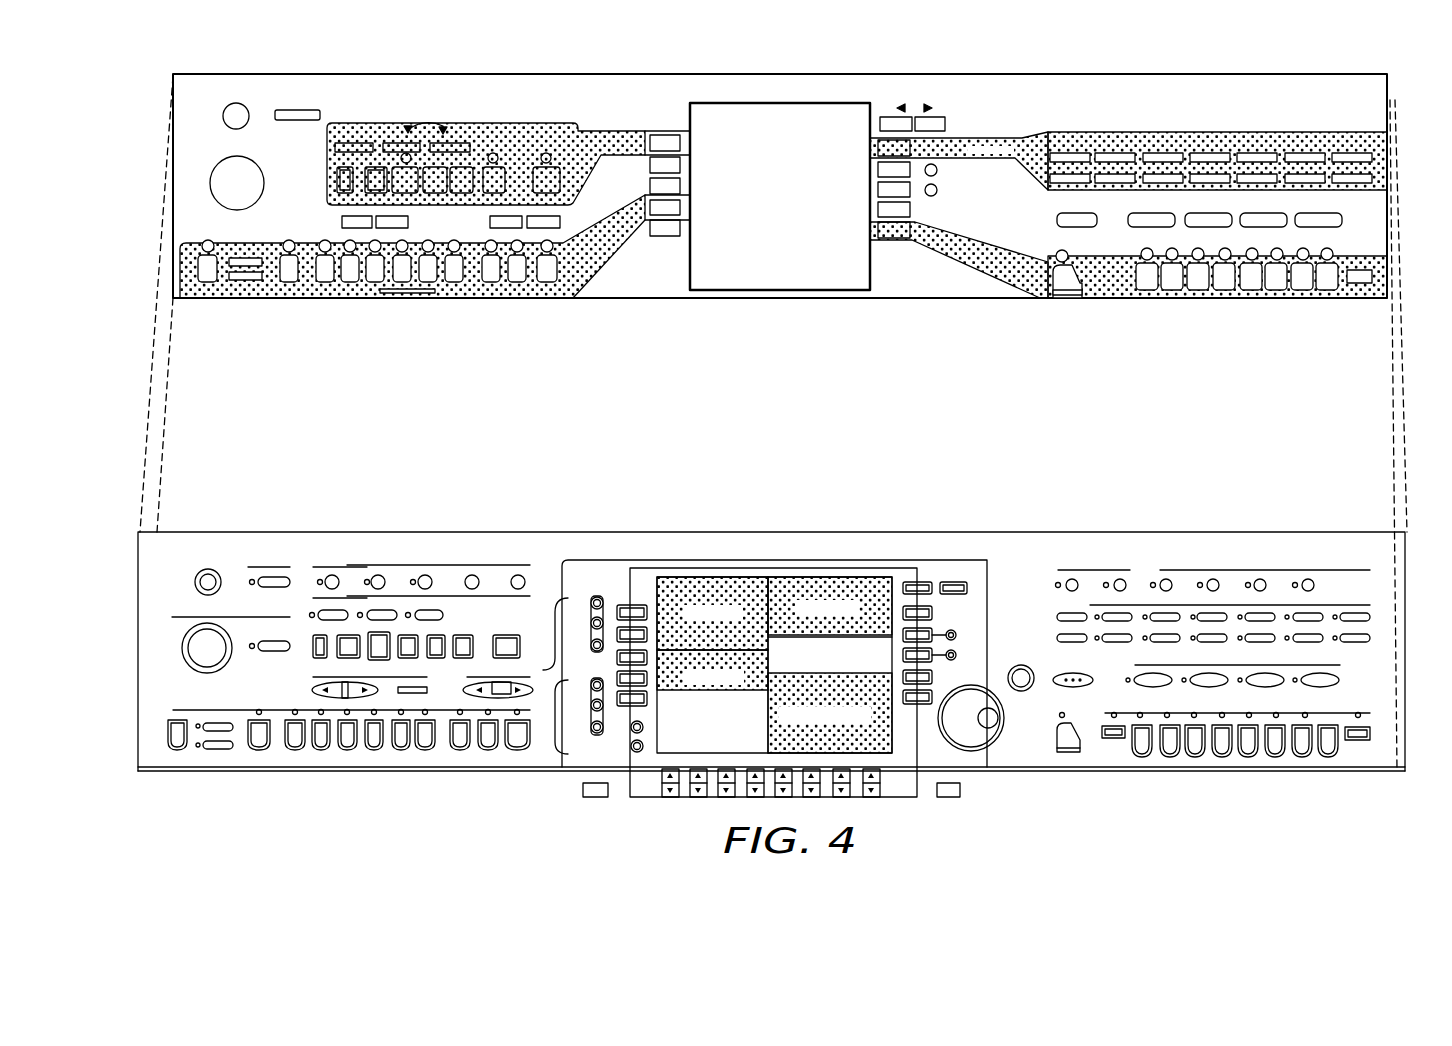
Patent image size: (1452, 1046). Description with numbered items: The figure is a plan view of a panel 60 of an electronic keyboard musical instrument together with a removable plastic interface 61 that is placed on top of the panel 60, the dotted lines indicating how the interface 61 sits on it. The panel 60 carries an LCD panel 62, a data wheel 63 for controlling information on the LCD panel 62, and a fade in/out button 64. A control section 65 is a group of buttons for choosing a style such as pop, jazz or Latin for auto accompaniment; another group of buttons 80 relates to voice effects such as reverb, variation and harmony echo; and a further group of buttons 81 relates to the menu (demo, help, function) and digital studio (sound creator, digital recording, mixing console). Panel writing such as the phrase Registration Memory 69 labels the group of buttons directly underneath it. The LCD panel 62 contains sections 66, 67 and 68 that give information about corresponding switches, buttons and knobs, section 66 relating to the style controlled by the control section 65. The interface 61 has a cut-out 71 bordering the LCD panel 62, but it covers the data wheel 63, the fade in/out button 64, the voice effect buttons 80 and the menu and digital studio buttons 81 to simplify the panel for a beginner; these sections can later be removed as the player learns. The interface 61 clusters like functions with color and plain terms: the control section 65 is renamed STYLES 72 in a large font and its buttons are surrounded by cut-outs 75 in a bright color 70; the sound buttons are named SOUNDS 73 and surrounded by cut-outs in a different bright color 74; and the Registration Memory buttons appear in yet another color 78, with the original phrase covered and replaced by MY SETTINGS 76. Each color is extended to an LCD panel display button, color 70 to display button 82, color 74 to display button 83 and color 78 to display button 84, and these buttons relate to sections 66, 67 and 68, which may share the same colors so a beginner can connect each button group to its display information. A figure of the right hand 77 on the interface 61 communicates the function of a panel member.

The panel 60 is at (1255, 795).
The interface 61 is at (1362, 75).
The LCD panel 62 is at (773, 667).
The data wheel 63 is at (1000, 742).
The fade in/out button 64 is at (273, 652).
The control section 65 is at (349, 710).
The section 66 is at (715, 662).
The section 67 is at (862, 582).
The section 68 is at (762, 709).
The Registration Memory writing 69 is at (1173, 712).
The color 70 is at (612, 247).
The cut-out 71 is at (840, 275).
The STYLES heading 72 is at (195, 232).
The SOUNDS heading 73 is at (1110, 120).
The color 74 is at (1018, 137).
The cut-outs 75 is at (575, 310).
The MY SETTINGS heading 76 is at (1222, 240).
The figure of the right hand 77 is at (443, 130).
The color 78 is at (1017, 287).
The group of buttons relating to voice effect 80 is at (1193, 632).
The group of buttons relating to the menu and digital studio 81 is at (543, 670).
The LCD panel display button 82 is at (617, 676).
The LCD panel display button 83 is at (933, 612).
The LCD panel display button 84 is at (962, 650).